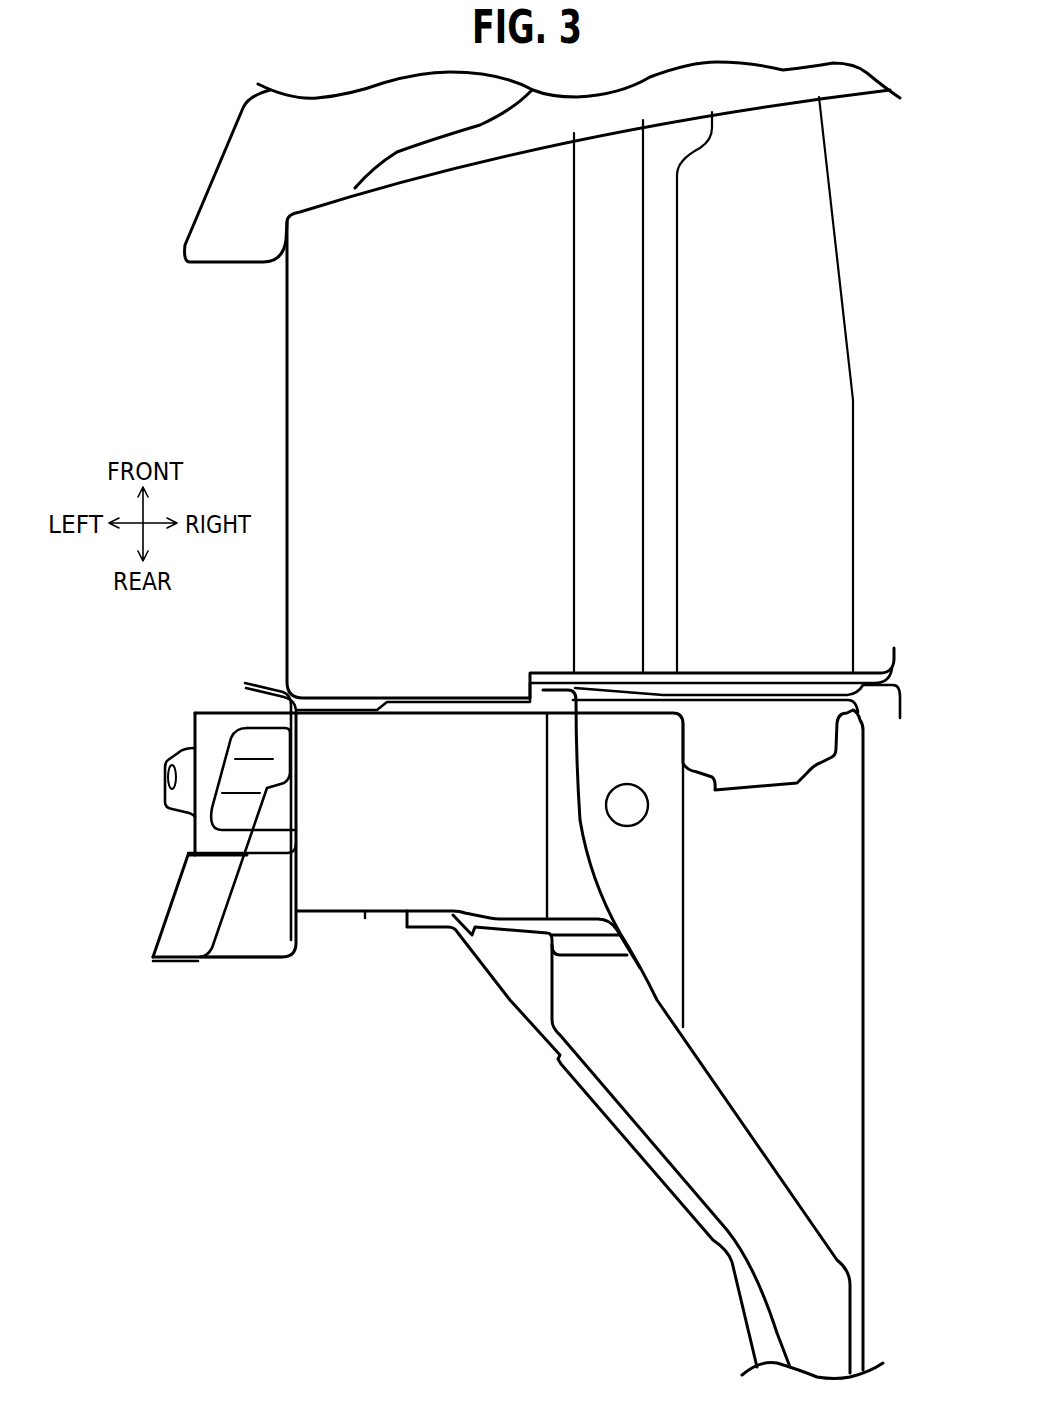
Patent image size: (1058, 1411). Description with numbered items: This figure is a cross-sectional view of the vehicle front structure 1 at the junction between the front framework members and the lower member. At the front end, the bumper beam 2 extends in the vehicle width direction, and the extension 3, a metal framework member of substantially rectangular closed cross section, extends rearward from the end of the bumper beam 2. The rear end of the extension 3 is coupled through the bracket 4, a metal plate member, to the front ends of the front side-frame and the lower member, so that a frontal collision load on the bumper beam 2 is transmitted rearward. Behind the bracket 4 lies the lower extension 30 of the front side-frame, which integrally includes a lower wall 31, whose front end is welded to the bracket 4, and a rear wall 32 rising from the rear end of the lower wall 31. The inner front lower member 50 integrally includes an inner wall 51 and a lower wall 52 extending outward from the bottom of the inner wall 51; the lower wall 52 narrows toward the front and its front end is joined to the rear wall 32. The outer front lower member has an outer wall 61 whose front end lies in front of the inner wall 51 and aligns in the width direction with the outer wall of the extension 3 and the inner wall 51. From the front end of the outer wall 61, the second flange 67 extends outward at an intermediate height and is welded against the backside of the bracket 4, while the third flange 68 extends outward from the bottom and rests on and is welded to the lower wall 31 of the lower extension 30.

The vehicle front structure 1 is at (167, 362).
The bumper beam 2 is at (233, 185).
The extension 3 is at (303, 458).
The bracket 4 is at (270, 683).
The lower extension 30 is at (414, 977).
The lower wall 31 is at (218, 737).
The rear wall 32 is at (298, 877).
The inner front lower member 50 is at (227, 962).
The inner wall 51 is at (292, 922).
The lower wall 52 is at (245, 930).
The outer wall 61 is at (243, 842).
The second flange 67 is at (247, 690).
The third flange 68 is at (235, 777).